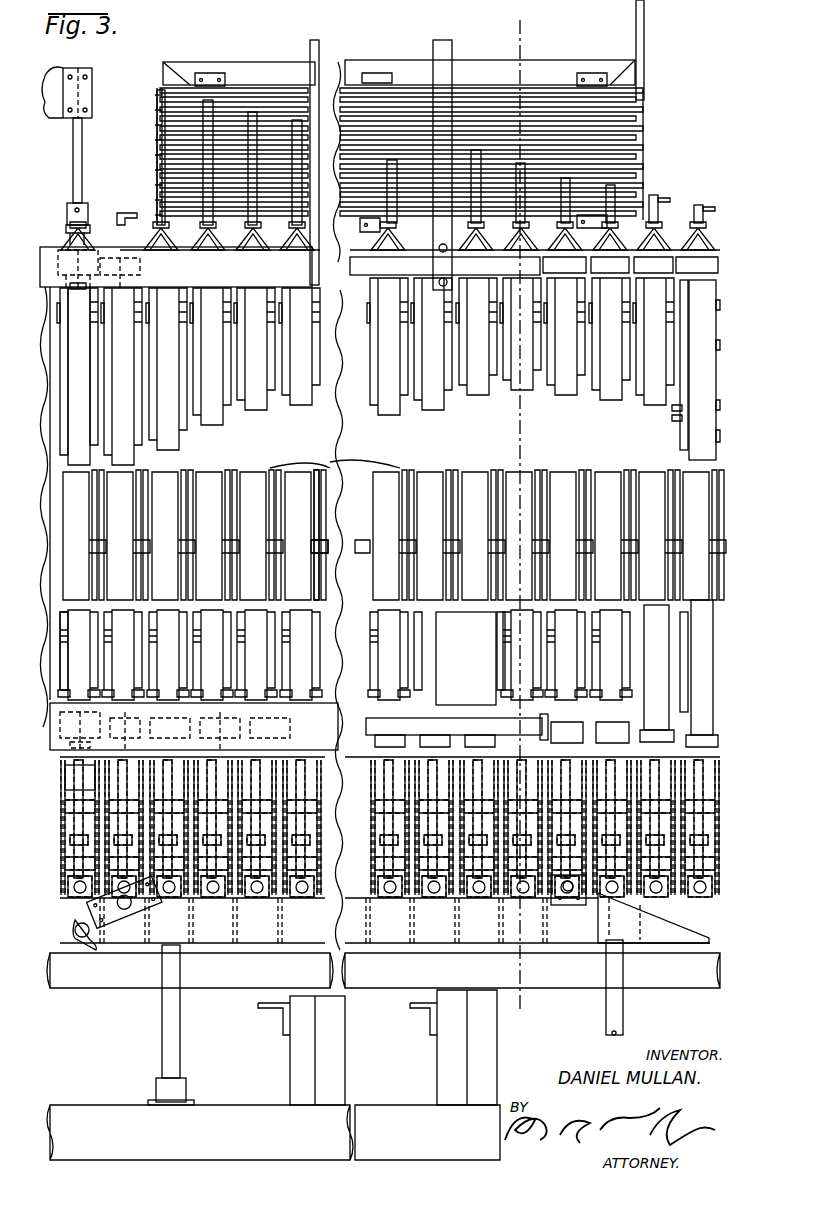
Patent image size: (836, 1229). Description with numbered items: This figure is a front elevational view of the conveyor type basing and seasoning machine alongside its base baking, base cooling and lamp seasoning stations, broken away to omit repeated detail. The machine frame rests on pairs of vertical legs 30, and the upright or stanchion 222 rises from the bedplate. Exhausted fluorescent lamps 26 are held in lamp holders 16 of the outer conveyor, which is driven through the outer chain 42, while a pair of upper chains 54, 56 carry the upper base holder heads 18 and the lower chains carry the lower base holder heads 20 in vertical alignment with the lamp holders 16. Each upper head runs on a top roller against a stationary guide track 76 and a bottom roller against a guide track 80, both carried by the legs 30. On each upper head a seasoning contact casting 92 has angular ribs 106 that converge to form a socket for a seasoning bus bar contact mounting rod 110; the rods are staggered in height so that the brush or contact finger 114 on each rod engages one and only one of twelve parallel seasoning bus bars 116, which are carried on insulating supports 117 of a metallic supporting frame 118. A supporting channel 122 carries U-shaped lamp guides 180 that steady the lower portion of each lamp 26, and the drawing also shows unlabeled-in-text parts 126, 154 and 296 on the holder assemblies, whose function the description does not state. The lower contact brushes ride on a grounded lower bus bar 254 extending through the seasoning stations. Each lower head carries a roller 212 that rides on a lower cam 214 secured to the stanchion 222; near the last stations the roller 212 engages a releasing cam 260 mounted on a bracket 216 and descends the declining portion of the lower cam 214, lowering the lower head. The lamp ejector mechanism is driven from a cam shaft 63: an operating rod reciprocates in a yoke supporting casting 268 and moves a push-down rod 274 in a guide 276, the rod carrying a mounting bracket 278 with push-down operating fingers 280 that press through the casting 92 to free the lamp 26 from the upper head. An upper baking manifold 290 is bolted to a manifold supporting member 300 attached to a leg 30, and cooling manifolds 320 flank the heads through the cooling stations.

The yoke supporting casting 268 is at (68, 118).
The guide 276 is at (92, 86).
The push-down rod 274 is at (82, 138).
The mounting bracket 278 is at (86, 204).
The push-down operating fingers 280 is at (66, 234).
The cooling manifold 320 is at (126, 268).
The angular ribs 106 is at (154, 203).
The seasoning bus bar contact mounting rod 110 is at (190, 130).
The insulating supports 117 is at (210, 73).
The metallic supporting frame 118 is at (551, 60).
The seasoning bus bars 116 is at (642, 127).
The brush or contact finger 114 is at (656, 207).
The seasoning contact casting 92 is at (700, 220).
The manifold supporting member 300 is at (444, 48).
The upper baking manifold 290 is at (350, 274).
The upper base holder heads 18 is at (315, 412).
The stationary guide track 76 is at (310, 354).
The guide track 80 is at (143, 441).
The upper chain 54 is at (318, 326).
The upper chain 56 is at (672, 407).
The exhausted fluorescent lamp 26 is at (252, 467).
The lamp holders 16 is at (270, 470).
The supporting channel 122 is at (318, 497).
The collar 126 is at (324, 542).
The collar 154 is at (354, 554).
The lamp guides 180 is at (314, 651).
The outer chain 42 is at (312, 626).
The cross bar 296 is at (364, 719).
The lower bus bar 254 is at (320, 790).
The lower base holder heads 20 is at (368, 842).
The lower cam 214 is at (312, 912).
The roller 212 is at (318, 878).
The bracket 216 is at (174, 916).
The cam shaft 63 is at (88, 988).
The releasing cam 260 is at (90, 952).
The upright or stanchion 222 is at (180, 1021).
The vertical legs 30 is at (432, 1046).